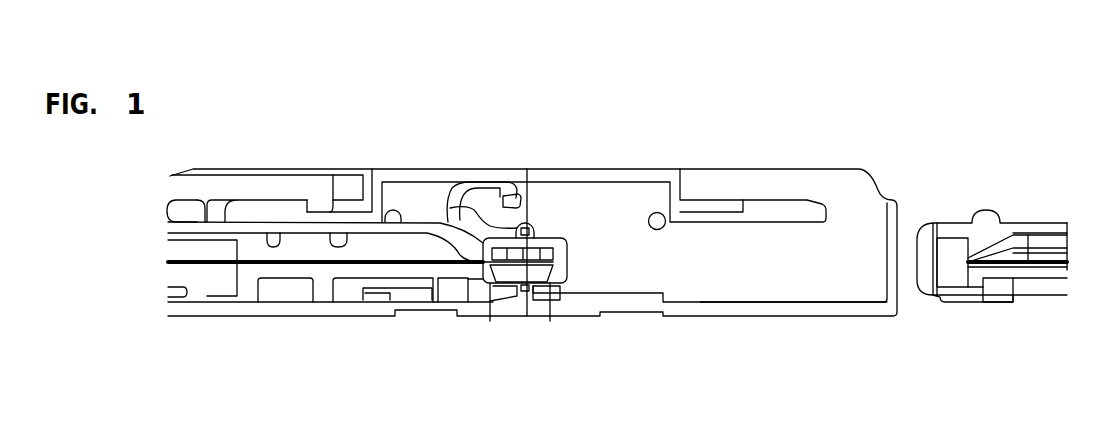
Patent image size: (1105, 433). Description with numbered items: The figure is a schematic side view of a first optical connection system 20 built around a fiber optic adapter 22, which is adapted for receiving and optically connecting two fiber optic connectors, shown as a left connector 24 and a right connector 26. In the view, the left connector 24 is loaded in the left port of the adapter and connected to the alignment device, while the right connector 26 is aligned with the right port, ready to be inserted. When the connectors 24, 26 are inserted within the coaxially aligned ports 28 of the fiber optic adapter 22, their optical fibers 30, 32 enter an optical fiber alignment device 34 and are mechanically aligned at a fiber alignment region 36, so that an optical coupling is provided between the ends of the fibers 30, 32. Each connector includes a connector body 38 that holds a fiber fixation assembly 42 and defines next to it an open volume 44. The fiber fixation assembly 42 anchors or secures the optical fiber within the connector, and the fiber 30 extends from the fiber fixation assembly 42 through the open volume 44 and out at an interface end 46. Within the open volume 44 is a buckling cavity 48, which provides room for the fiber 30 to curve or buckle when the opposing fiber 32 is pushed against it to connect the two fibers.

The first optical connection system 20 is at (793, 85).
The fiber optic adapter 22 is at (590, 169).
The left connector 24 is at (421, 208).
The right connector 26 is at (975, 302).
The ports 28 is at (767, 302).
The optical fiber 30 is at (437, 263).
The optical fiber 32 is at (1042, 258).
The optical fiber alignment device 34 is at (548, 302).
The fiber alignment region 36 is at (528, 247).
The connector body 38 is at (202, 228).
The fiber fixation assembly 42 is at (207, 290).
The open volume 44 is at (346, 236).
The interface end 46 is at (491, 302).
The buckling cavity 48 is at (269, 236).